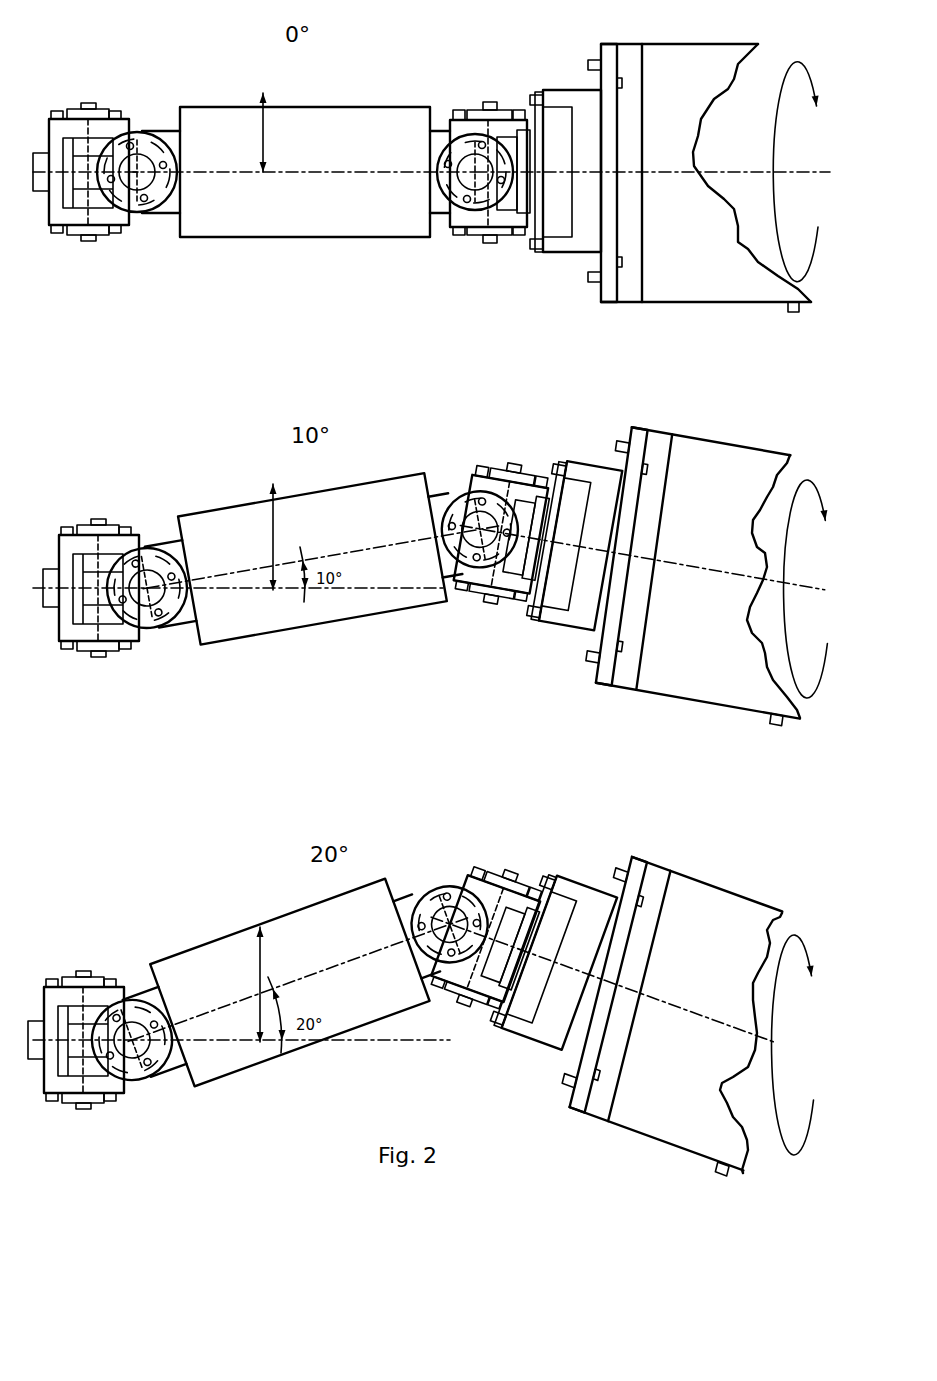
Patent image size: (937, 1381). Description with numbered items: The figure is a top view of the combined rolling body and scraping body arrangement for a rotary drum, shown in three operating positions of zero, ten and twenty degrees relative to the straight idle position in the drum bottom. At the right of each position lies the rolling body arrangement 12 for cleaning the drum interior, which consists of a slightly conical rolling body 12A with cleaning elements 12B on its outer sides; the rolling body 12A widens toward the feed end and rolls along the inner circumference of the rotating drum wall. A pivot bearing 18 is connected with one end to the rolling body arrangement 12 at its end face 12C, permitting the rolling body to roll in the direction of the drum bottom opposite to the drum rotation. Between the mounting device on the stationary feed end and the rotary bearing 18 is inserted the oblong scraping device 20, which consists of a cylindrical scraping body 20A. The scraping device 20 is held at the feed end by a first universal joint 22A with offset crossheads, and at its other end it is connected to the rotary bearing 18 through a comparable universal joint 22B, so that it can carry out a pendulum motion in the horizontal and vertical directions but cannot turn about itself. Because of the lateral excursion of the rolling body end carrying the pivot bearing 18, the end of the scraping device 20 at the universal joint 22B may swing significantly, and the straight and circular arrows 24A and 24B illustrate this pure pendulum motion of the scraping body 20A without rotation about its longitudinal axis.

The rolling body arrangement 12 is at (630, 567).
The rolling body 12A is at (707, 44).
The cleaning elements 12B is at (787, 309).
The end face 12C is at (597, 302).
The pivot bearing 18 is at (555, 570).
The scraping device 20 is at (267, 537).
The scraping body 20A is at (277, 244).
The first universal joint 22A is at (112, 606).
The universal joint 22B is at (473, 588).
The straight arrow 24A is at (265, 143).
The circular arrow 24B is at (775, 151).